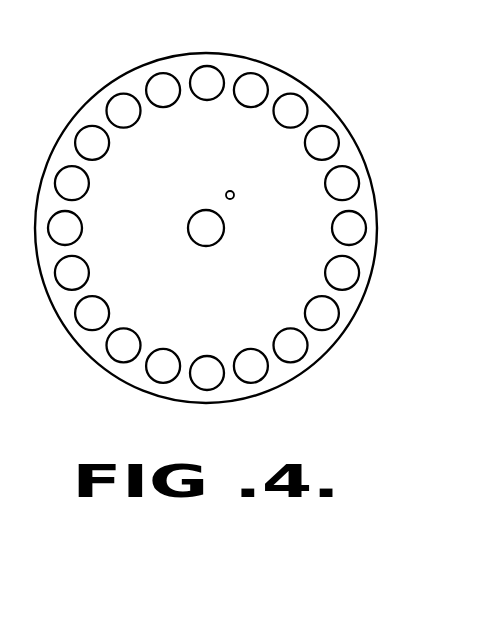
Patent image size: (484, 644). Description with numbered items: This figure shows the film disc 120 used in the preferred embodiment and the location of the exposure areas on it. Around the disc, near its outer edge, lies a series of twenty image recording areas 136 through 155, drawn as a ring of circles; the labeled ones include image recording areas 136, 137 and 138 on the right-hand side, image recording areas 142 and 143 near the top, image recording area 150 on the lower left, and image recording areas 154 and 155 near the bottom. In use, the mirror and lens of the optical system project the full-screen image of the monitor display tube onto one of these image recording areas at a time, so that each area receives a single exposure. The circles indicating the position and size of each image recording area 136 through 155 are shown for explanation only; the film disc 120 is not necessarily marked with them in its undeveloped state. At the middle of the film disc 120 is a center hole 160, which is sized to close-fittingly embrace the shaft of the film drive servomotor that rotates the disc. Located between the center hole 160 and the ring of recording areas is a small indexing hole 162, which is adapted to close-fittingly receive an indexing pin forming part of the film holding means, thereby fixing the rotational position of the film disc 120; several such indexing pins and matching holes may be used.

The film disc 120 is at (347, 350).
The image recording area 136 is at (330, 318).
The image recording area 137 is at (347, 274).
The image recording area 138 is at (370, 228).
The image recording area 142 is at (253, 85).
The image recording area 143 is at (208, 80).
The image recording area 150 is at (82, 320).
The image recording area 154 is at (252, 370).
The image recording area 155 is at (300, 352).
The center hole 160 is at (205, 238).
The indexing hole 162 is at (240, 168).